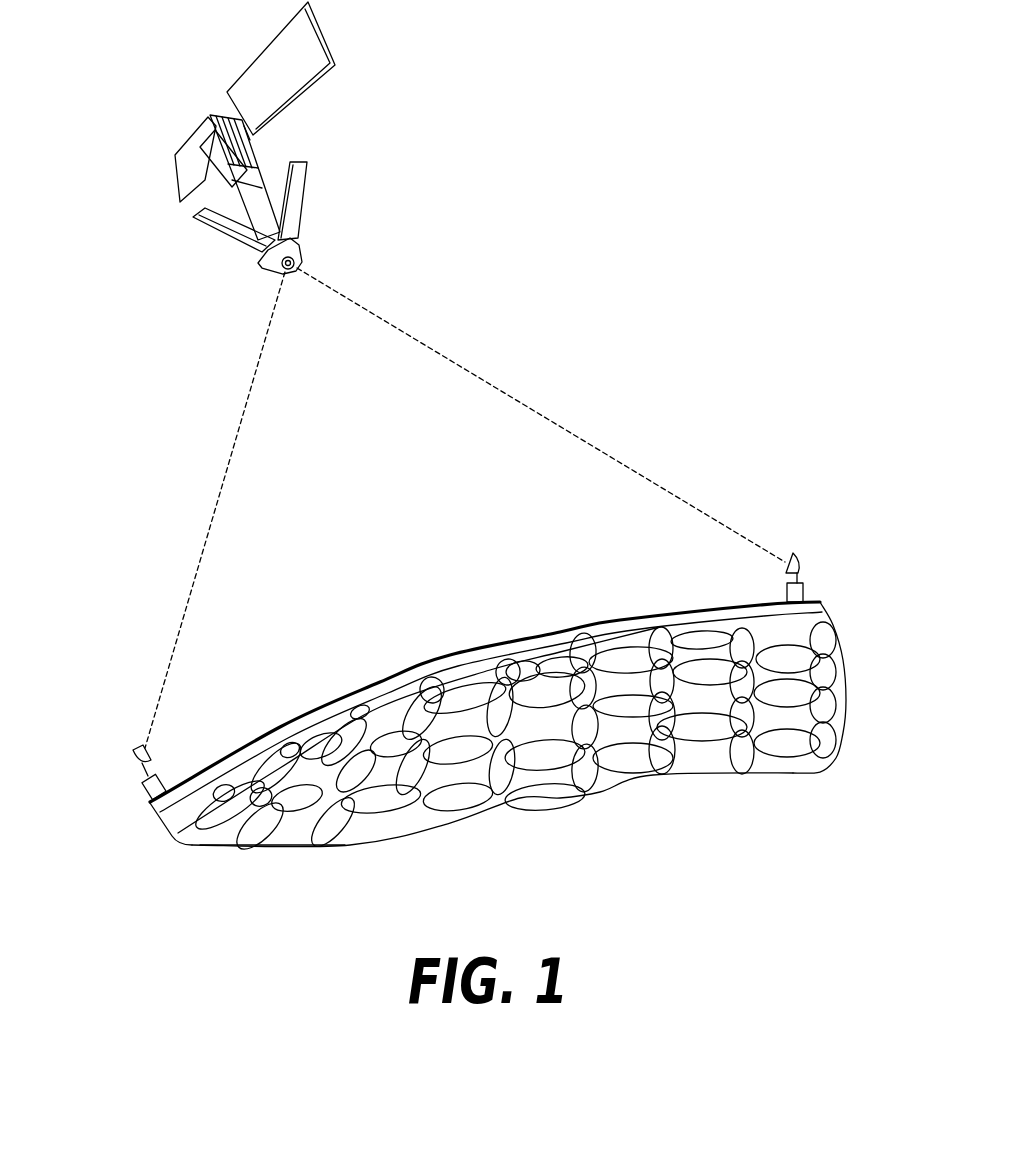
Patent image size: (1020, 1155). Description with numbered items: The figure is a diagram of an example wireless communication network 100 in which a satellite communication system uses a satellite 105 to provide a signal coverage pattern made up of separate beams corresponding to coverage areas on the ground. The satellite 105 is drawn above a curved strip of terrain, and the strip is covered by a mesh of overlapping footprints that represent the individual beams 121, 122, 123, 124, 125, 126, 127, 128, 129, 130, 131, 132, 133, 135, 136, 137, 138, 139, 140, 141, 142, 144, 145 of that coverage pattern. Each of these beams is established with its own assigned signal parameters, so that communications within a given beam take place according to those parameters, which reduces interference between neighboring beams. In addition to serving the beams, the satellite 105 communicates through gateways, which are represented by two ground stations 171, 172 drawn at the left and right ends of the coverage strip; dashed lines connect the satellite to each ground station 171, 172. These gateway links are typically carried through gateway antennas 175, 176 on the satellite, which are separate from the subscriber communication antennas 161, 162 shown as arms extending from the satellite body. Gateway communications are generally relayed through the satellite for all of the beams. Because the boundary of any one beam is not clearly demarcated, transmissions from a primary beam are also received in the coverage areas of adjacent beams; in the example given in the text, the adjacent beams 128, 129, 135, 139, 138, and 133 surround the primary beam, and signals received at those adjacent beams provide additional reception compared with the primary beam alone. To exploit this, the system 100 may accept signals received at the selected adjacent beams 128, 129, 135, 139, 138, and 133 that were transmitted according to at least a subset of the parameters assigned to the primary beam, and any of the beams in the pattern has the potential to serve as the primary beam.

The wireless communication network 100 is at (610, 284).
The satellite 105 is at (178, 121).
The subscriber communication antenna 161 is at (203, 218).
The subscriber communication antenna 162 is at (298, 170).
The ground station 171 is at (143, 786).
The ground station 172 is at (820, 598).
The gateway antenna 175 is at (283, 280).
The gateway antenna 176 is at (327, 280).
The beam 121 is at (312, 760).
The beam 122 is at (392, 725).
The beam 123 is at (492, 684).
The beam 124 is at (578, 660).
The beam 125 is at (275, 835).
The beam 126 is at (360, 780).
The beam 127 is at (460, 723).
The adjacent beam 128 is at (542, 683).
The adjacent beam 129 is at (635, 650).
The beam 130 is at (705, 620).
The beam 131 is at (370, 833).
The beam 132 is at (454, 773).
The adjacent beam 133 is at (540, 730).
The adjacent beam 135 is at (775, 618).
The beam 136 is at (797, 634).
The beam 137 is at (562, 787).
The adjacent beam 138 is at (625, 685).
The adjacent beam 139 is at (685, 655).
The beam 140 is at (797, 672).
The beam 141 is at (642, 777).
The beam 142 is at (720, 690).
The beam 144 is at (797, 714).
The beam 145 is at (797, 768).